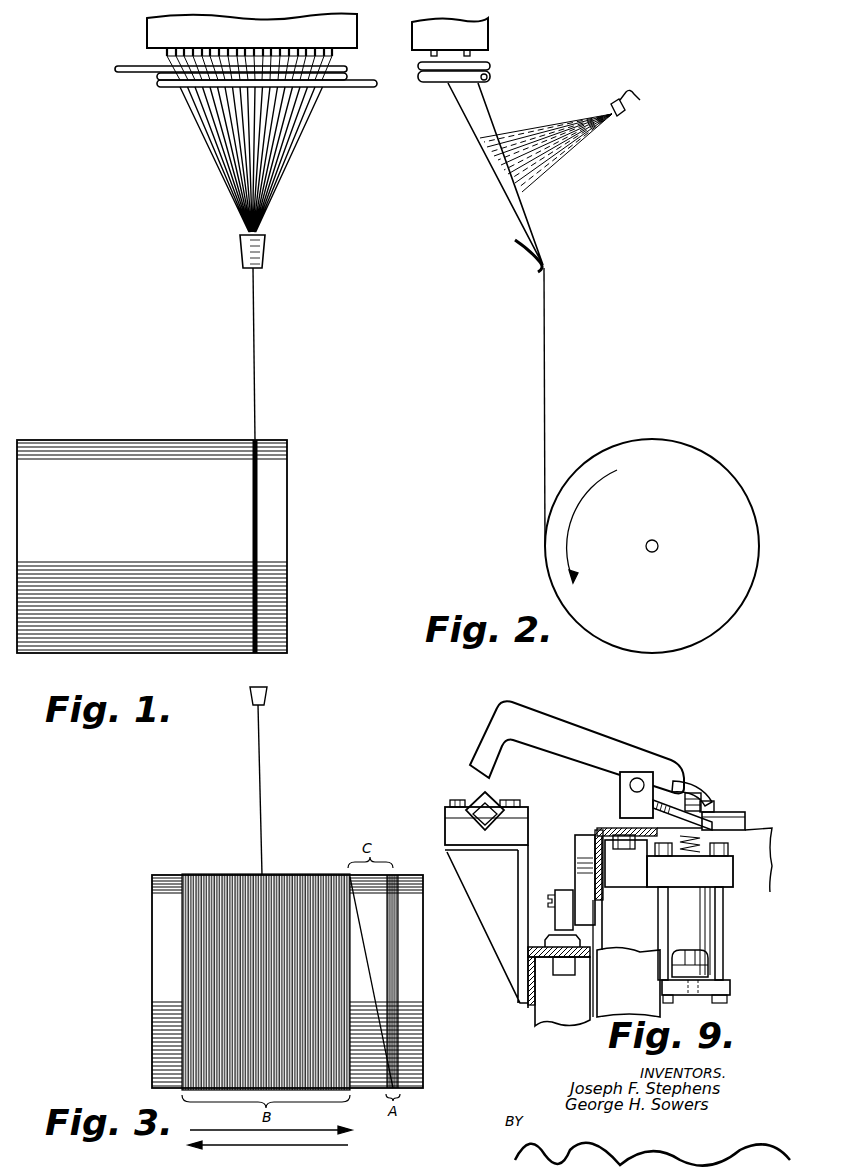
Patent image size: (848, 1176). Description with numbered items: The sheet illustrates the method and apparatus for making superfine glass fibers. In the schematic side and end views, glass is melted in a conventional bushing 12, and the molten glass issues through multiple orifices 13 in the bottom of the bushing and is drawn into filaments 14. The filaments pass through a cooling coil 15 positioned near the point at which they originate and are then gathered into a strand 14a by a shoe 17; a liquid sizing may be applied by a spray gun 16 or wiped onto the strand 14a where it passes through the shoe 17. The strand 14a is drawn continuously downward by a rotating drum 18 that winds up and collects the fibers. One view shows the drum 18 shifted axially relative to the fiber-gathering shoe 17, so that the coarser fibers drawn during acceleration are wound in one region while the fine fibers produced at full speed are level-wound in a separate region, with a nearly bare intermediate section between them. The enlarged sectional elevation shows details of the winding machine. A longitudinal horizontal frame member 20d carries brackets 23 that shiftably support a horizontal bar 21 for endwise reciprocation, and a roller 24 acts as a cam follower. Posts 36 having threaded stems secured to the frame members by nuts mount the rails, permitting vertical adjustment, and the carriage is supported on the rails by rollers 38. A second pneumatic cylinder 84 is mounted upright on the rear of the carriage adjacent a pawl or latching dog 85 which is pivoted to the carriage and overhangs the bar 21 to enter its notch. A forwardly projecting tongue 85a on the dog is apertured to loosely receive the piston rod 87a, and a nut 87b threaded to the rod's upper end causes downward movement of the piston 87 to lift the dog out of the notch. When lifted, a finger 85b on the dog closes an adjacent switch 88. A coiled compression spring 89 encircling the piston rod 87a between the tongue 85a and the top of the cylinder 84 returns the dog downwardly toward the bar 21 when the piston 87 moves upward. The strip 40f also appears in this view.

In FIG. 1, the bushing 12 is at (160, 34).
In FIG. 1, the orifices 13 is at (166, 53).
In FIG. 2, the orifices 13 is at (432, 48).
In FIG. 1, the filaments 14 is at (192, 157).
In FIG. 2, the filaments 14 is at (525, 215).
In FIG. 1, the strand 14a is at (256, 365).
In FIG. 2, the strand 14a is at (547, 372).
In FIG. 3, the strand 14a is at (262, 797).
In FIG. 1, the cooling coil 15 is at (162, 84).
In FIG. 2, the cooling coil 15 is at (492, 74).
In FIG. 2, the spray gun 16 is at (560, 132).
In FIG. 1, the shoe 17 is at (266, 250).
In FIG. 2, the shoe 17 is at (521, 251).
In FIG. 3, the shoe 17 is at (268, 695).
In FIG. 1, the drum 18 is at (150, 455).
In FIG. 2, the drum 18 is at (680, 460).
In FIG. 3, the drum 18 is at (165, 932).
In FIG. 9, the horizontal frame member 20d is at (559, 980).
In FIG. 9, the horizontal bar 21 is at (472, 816).
In FIG. 9, the brackets 23 is at (478, 880).
In FIG. 9, the roller 24 is at (603, 908).
In FIG. 9, the posts 36 is at (560, 890).
In FIG. 9, the rollers 38 is at (577, 842).
In FIG. 9, the guide strip 40f is at (599, 828).
In FIG. 9, the second pneumatic cylinder 84 is at (705, 920).
In FIG. 9, the latching dog 85 is at (615, 752).
In FIG. 9, the tongue 85a is at (726, 836).
In FIG. 9, the finger 85b is at (690, 790).
In FIG. 9, the piston 87 is at (708, 964).
In FIG. 9, the piston rod 87a is at (700, 790).
In FIG. 9, the nut 87b is at (714, 806).
In FIG. 9, the switch 88 is at (745, 820).
In FIG. 9, the coiled compression spring 89 is at (733, 870).